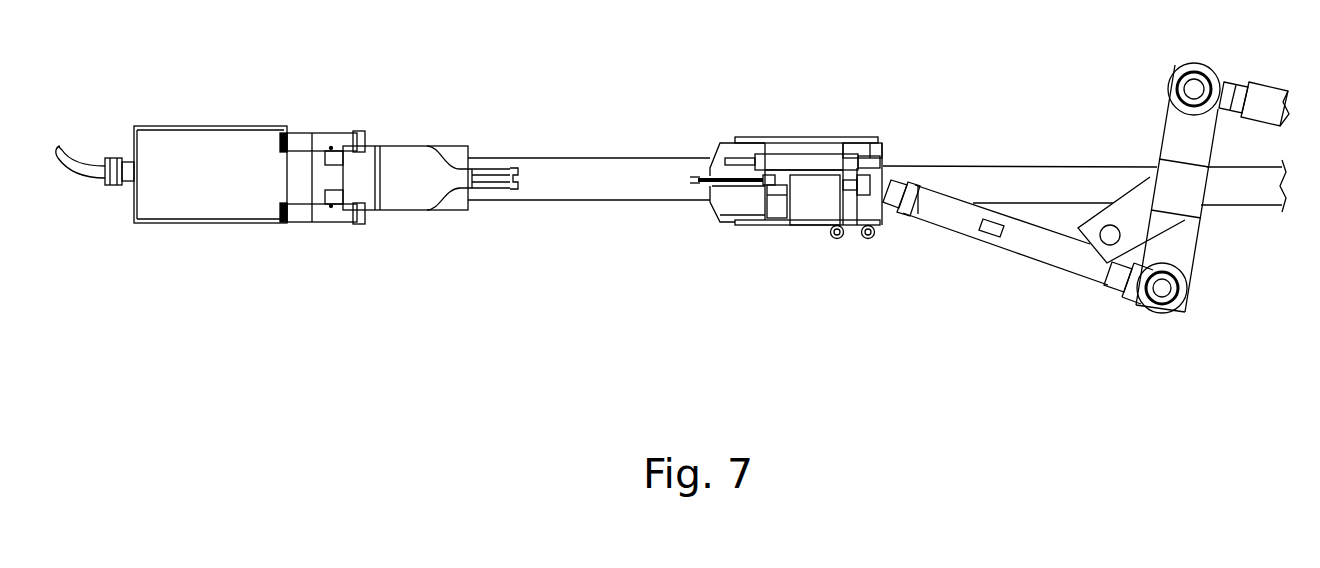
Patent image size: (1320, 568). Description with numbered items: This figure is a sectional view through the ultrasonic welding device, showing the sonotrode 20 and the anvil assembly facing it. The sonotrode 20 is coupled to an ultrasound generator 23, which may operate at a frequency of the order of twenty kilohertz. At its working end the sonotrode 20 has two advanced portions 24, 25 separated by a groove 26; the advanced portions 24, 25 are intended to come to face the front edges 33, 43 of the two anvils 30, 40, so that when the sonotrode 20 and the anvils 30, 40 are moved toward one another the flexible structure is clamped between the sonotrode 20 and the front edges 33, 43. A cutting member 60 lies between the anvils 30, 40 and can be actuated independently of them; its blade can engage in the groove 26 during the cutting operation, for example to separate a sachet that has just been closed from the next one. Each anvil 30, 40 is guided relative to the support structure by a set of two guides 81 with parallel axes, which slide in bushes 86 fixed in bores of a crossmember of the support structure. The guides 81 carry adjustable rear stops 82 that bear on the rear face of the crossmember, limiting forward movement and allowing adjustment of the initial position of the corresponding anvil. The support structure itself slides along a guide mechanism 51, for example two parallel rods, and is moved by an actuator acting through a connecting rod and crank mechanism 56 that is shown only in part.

The ultrasound generator 23 is at (201, 198).
The sonotrode 20 is at (400, 185).
The advanced portion 24 is at (513, 170).
The advanced portion 25 is at (512, 191).
The groove 26 is at (500, 184).
The front edge 33 is at (700, 168).
The cutting member 60 is at (700, 180).
The front edge 43 is at (700, 195).
The anvil 40 is at (723, 208).
The anvil 30 is at (720, 152).
The guide 81 is at (790, 158).
The bush 86 is at (830, 152).
The adjustable rear stop 82 is at (863, 150).
The guide mechanism 51 is at (1000, 180).
The connecting rod and crank mechanism 56 is at (1037, 250).